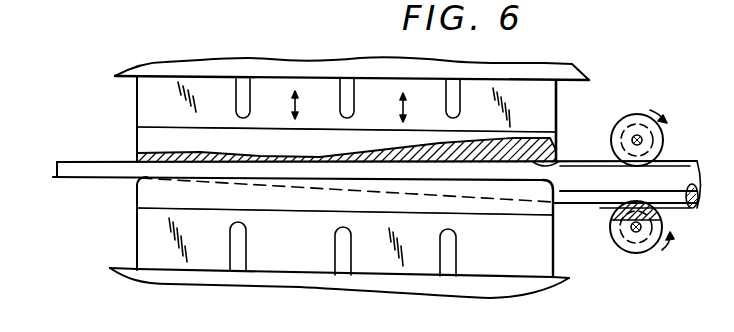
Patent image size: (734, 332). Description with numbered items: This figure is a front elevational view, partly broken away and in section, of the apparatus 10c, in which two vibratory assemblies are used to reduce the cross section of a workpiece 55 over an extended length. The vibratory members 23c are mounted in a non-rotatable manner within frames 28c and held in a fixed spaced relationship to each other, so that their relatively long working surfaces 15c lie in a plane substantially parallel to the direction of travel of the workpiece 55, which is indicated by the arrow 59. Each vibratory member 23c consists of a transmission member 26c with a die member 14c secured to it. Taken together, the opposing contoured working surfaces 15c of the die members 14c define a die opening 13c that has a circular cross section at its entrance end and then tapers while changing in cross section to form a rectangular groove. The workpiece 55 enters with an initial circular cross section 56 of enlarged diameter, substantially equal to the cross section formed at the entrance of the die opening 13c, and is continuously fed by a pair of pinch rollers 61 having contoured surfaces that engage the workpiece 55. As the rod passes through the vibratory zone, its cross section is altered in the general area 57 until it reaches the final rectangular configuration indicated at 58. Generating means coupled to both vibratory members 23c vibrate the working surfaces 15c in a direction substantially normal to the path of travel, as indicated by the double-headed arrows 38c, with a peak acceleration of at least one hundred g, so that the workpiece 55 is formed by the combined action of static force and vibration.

The apparatus 10c is at (603, 83).
The die opening 13c is at (472, 174).
The die member 14c is at (147, 138).
The working surfaces 15c is at (562, 162).
The vibratory members 23c is at (156, 115).
The transmission member 26c is at (571, 62).
The frames 28c is at (330, 60).
The double-headed arrows 38c is at (296, 106).
The workpiece 55 is at (586, 185).
The initial cross section 56 is at (604, 210).
The general area 57 is at (382, 172).
The final shape 58 is at (57, 177).
The arrow 59 is at (79, 147).
The pinch rollers 61 is at (611, 133).